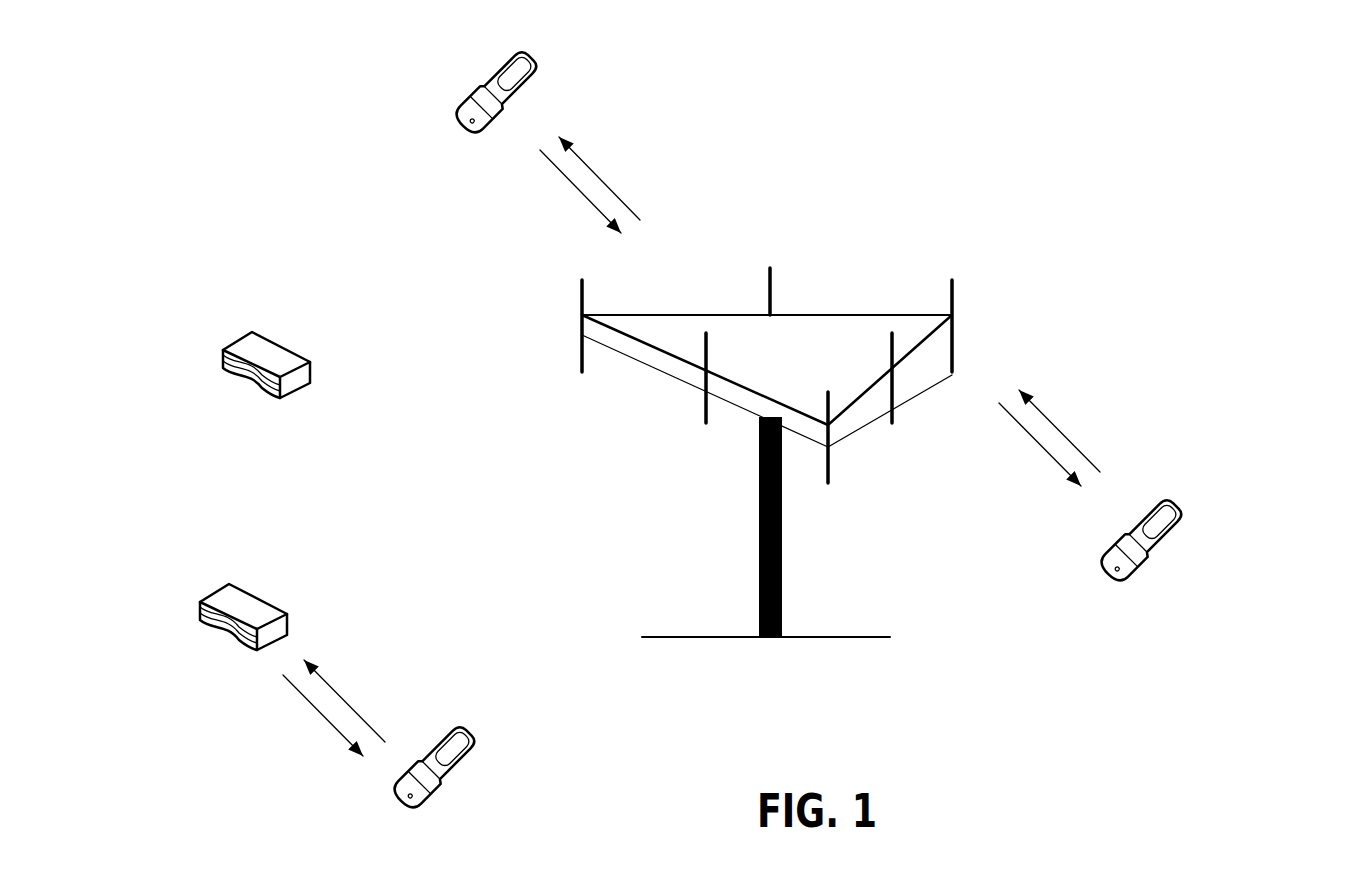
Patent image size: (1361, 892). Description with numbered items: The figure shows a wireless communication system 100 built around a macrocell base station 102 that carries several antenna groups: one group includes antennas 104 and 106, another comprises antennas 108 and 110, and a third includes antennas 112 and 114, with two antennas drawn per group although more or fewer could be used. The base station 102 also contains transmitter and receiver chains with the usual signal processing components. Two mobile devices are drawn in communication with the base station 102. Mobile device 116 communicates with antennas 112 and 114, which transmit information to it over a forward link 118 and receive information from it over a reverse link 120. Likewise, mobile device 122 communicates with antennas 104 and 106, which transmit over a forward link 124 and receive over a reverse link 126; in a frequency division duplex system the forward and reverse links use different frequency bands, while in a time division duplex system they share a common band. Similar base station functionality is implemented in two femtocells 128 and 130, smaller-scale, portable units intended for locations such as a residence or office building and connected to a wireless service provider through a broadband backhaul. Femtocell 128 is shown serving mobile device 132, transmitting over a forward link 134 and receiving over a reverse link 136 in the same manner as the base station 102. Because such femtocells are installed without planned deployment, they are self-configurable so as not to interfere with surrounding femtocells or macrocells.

The wireless communication system 100 is at (1241, 96).
The base station 102 is at (783, 637).
The antenna 104 is at (952, 280).
The antenna 106 is at (892, 405).
The antenna 108 is at (828, 465).
The antenna 110 is at (706, 425).
The antenna 112 is at (582, 280).
The antenna 114 is at (770, 270).
The mobile device 116 is at (507, 50).
The forward link 118 is at (600, 177).
The reverse link 120 is at (592, 207).
The mobile device 122 is at (1147, 498).
The forward link 124 is at (1047, 455).
The reverse link 126 is at (1053, 425).
The femtocell 128 is at (227, 587).
The femtocell 130 is at (252, 332).
The mobile device 132 is at (447, 725).
The forward link 134 is at (333, 728).
The reverse link 136 is at (345, 703).